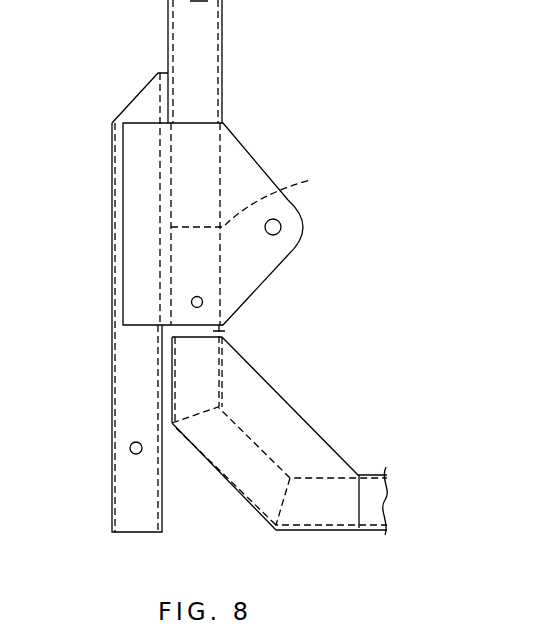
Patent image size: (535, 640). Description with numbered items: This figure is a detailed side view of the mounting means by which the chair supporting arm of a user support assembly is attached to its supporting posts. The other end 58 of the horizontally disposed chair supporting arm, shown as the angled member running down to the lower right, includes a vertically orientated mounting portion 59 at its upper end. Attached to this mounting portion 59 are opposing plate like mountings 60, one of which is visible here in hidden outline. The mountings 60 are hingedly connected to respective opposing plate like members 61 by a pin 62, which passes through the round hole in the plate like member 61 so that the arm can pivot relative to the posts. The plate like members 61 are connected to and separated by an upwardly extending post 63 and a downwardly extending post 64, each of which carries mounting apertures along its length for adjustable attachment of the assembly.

The other end of the chair supporting arm 58 is at (373, 518).
The vertically orientated mounting portion 59 is at (220, 333).
The plate like mountings 60 is at (255, 198).
The plate like members 61 is at (252, 153).
The pin 62 is at (282, 229).
The upwardly extending post 63 is at (207, 45).
The downwardly extending post 64 is at (130, 413).